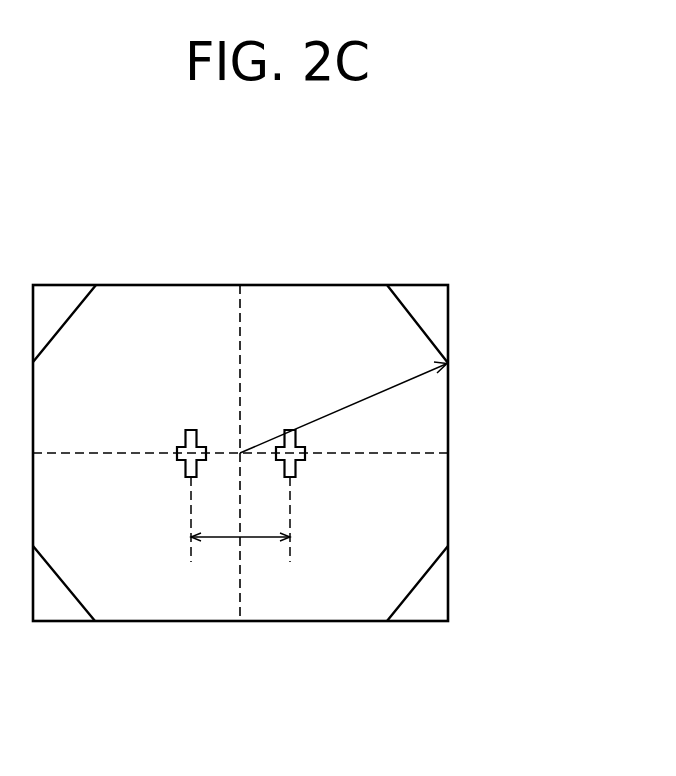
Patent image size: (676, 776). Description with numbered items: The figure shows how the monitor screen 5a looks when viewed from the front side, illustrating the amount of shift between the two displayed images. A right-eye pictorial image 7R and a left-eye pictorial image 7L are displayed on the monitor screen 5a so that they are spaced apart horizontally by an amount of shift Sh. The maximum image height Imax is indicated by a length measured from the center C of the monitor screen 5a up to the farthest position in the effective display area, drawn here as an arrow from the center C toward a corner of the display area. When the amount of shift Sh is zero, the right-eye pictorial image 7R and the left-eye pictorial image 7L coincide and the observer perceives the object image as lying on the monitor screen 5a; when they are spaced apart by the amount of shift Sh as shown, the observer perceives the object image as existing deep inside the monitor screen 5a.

The monitor screen 5a is at (176, 285).
The center of the monitor screen C is at (240, 453).
The maximum image height Imax is at (450, 363).
The left-eye pictorial image 7L is at (186, 468).
The right-eye pictorial image 7R is at (295, 468).
The amount of shift Sh is at (255, 538).